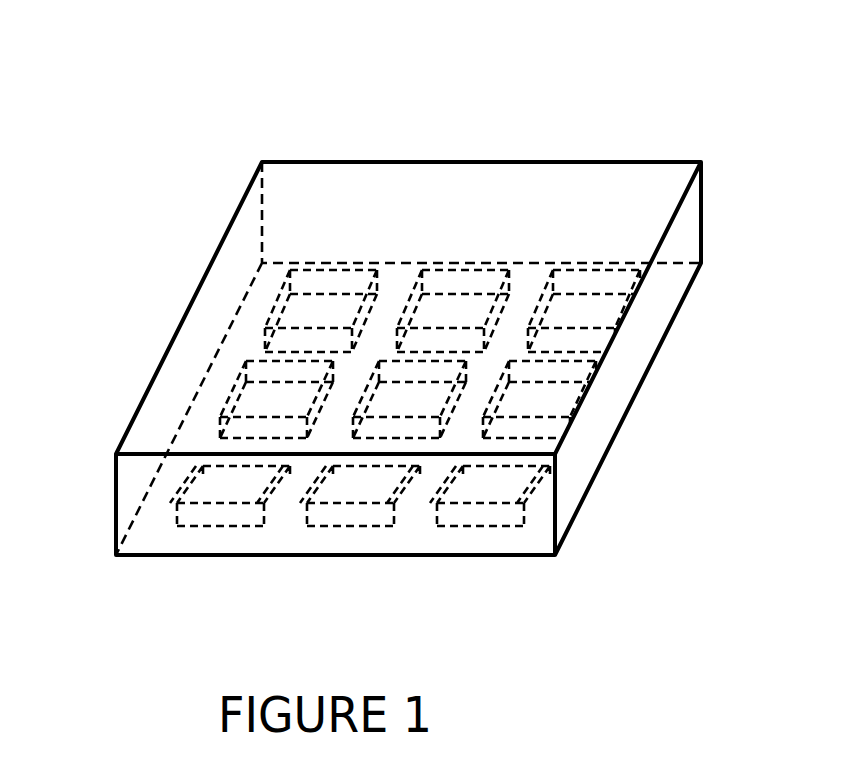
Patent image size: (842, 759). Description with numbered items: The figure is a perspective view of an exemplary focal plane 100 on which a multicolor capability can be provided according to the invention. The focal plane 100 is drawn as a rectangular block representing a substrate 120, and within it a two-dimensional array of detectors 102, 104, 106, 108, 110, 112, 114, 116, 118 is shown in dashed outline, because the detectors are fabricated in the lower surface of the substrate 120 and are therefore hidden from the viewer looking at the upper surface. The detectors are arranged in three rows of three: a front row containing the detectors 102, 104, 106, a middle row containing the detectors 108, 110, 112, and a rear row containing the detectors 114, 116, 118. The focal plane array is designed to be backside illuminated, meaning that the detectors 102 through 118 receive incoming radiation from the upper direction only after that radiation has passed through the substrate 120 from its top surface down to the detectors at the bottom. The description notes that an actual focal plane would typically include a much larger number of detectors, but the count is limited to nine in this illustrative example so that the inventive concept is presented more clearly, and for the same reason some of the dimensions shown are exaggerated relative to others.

The focal plane 100 is at (200, 252).
The detector 102 is at (218, 517).
The detector 104 is at (345, 517).
The detector 106 is at (477, 517).
The detector 108 is at (243, 410).
The detector 110 is at (385, 428).
The detector 112 is at (567, 398).
The detector 114 is at (345, 280).
The detector 116 is at (447, 285).
The detector 118 is at (580, 282).
The substrate 120 is at (387, 162).